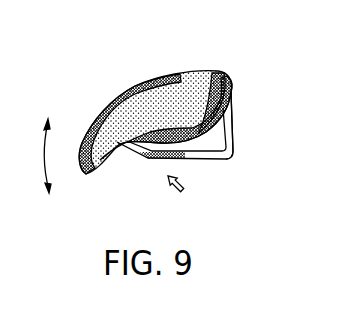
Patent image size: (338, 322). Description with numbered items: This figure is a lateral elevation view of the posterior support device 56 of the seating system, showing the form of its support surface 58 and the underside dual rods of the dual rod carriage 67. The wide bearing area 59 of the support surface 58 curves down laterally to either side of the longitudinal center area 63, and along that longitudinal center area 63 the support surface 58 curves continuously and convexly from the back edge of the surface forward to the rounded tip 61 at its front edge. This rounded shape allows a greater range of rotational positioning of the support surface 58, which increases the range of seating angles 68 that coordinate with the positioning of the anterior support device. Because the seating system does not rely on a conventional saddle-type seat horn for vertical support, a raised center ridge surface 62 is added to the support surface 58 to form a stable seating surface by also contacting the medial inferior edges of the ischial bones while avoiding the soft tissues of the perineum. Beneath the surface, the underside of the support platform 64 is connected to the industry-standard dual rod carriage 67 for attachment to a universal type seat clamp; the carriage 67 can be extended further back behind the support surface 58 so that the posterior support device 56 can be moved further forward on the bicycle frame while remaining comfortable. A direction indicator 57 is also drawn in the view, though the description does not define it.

The posterior support device 56 is at (265, 197).
The direction of movement 57 is at (186, 195).
The support surface 58 is at (170, 125).
The wide bearing area 59 is at (196, 119).
The rounded tip 61 is at (83, 164).
The raised center ridge surface 62 is at (155, 80).
The longitudinal center area 63 is at (232, 79).
The support platform 64 is at (120, 142).
The dual rod carriage 67 is at (220, 162).
The seating angles 68 is at (46, 179).